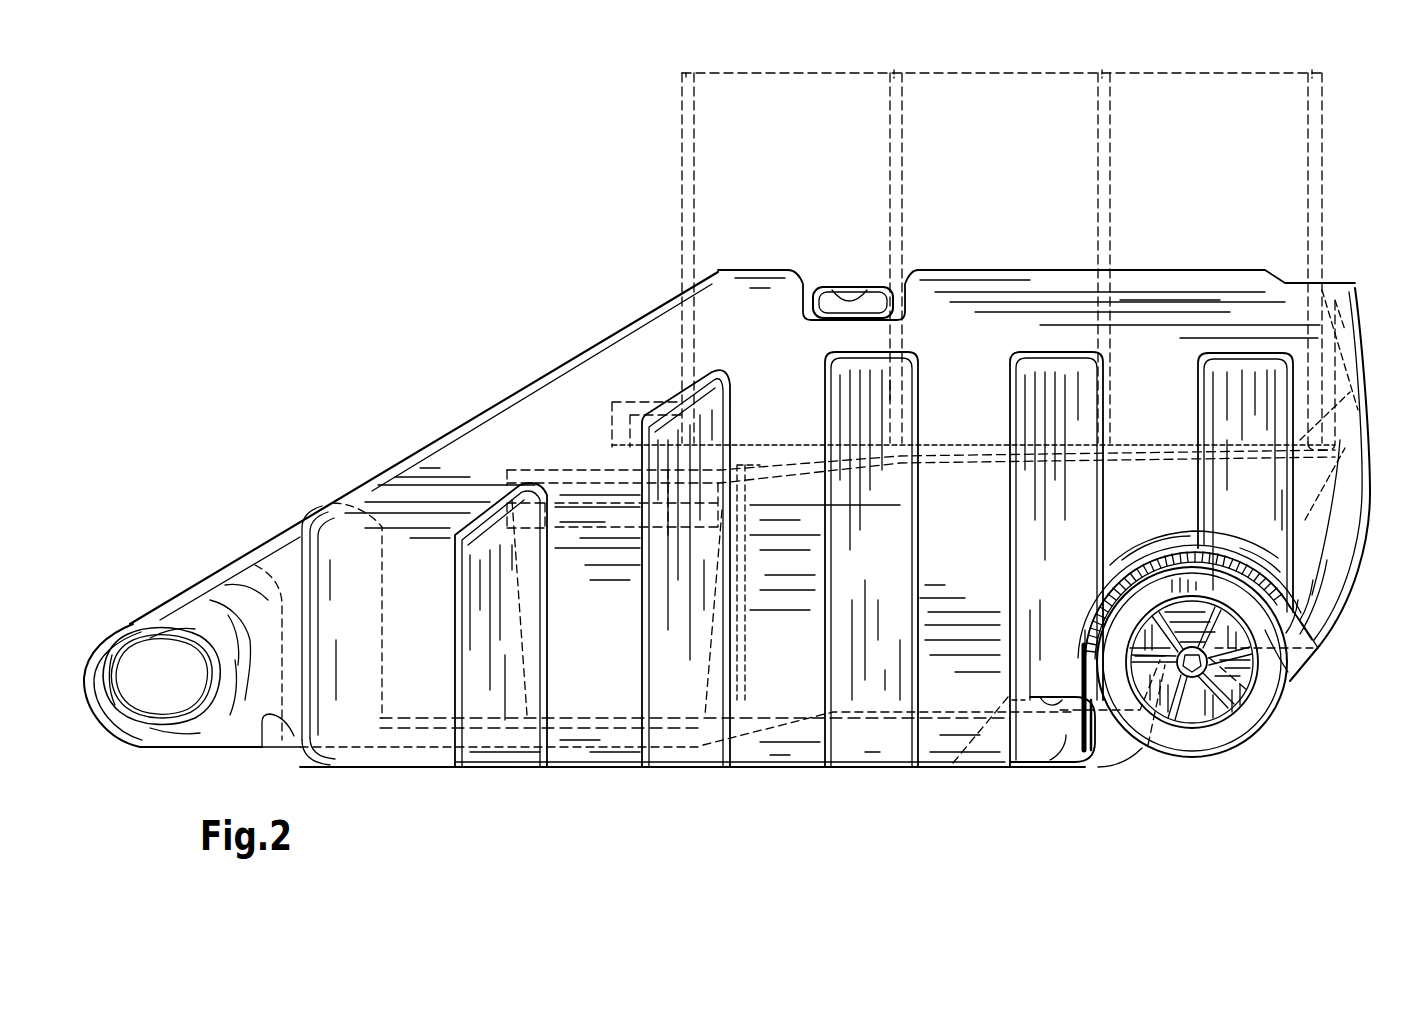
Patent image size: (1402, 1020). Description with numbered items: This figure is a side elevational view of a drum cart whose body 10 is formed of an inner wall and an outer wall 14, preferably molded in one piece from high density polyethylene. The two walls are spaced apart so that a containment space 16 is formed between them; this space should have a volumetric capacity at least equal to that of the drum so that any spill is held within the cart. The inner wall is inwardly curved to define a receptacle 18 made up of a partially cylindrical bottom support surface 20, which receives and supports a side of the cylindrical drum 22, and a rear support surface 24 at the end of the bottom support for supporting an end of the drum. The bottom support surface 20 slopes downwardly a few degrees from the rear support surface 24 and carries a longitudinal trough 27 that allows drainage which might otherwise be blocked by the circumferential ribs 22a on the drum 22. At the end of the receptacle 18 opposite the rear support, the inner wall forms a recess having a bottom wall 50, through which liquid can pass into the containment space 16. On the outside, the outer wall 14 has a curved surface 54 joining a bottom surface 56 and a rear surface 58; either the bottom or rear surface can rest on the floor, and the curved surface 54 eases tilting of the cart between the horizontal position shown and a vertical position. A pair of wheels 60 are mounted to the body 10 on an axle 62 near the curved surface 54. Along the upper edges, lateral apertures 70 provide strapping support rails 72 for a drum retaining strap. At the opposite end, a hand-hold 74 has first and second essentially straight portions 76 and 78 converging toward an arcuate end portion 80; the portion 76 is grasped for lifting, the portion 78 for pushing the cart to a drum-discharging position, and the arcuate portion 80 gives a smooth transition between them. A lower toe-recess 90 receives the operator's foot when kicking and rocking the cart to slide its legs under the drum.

The body 10 is at (430, 408).
The outer wall 14 is at (590, 378).
The containment space 16 is at (947, 700).
The receptacle 18 is at (934, 438).
The bottom support surface 20 is at (757, 445).
The cylindrical drum 22 is at (682, 124).
The circumferential ribs 22a is at (896, 73).
The rear support surface 24 is at (1330, 330).
The longitudinal trough 27 is at (797, 468).
The bottom wall 50 is at (740, 677).
The curved surface 54 is at (1345, 605).
The bottom surface 56 is at (1078, 764).
The rear surface 58 is at (1362, 440).
The wheels 60 is at (1208, 738).
The axle 62 is at (1194, 678).
The lateral apertures 70 is at (866, 290).
The strapping support rails 72 is at (838, 268).
The hand-hold 74 is at (125, 618).
The first straight portion 76 is at (133, 628).
The second straight portion 78 is at (165, 748).
The arcuate end portion 80 is at (86, 690).
The toe-recess 90 is at (1050, 700).